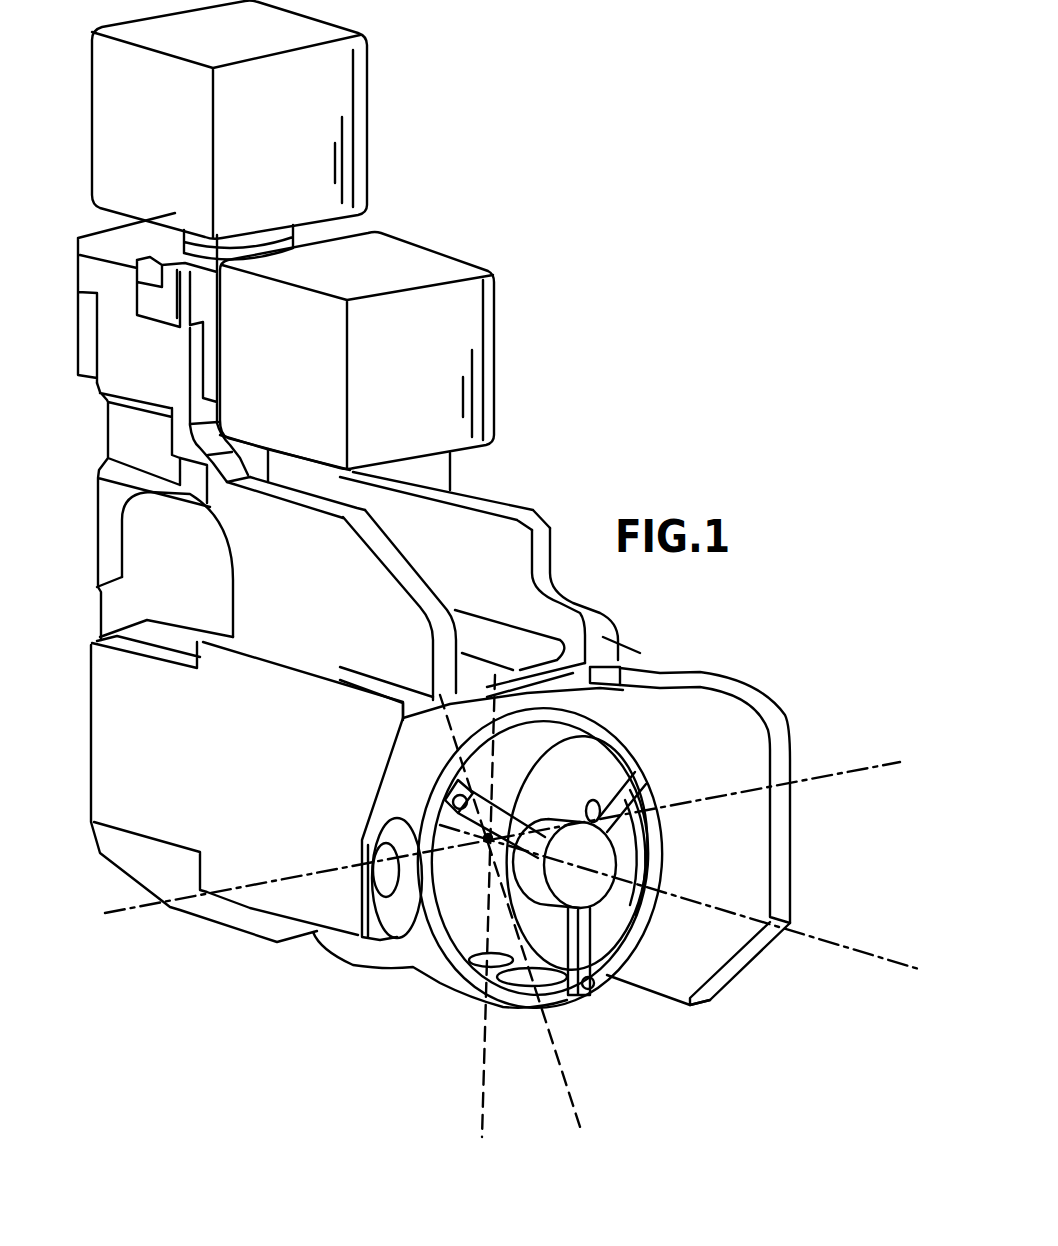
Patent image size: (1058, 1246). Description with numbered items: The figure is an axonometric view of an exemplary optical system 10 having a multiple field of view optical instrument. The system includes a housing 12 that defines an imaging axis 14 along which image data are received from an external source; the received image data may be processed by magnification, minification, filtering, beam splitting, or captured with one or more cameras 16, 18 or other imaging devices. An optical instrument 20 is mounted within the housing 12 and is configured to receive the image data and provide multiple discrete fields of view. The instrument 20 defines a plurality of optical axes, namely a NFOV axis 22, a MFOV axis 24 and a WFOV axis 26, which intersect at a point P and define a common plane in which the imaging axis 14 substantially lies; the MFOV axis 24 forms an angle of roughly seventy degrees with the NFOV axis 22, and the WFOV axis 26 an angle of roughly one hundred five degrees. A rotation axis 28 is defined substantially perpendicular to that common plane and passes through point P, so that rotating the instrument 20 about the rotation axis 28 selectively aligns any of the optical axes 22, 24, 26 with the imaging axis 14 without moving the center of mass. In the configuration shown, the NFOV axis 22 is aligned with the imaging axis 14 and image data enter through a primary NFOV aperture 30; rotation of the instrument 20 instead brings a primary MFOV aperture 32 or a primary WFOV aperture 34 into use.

The optical system 10 is at (624, 265).
The housing 12 is at (97, 603).
The imaging axis 14 is at (833, 936).
The camera 16 is at (497, 355).
The camera 18 is at (375, 120).
The optical instrument 20 is at (372, 990).
The NFOV axis 22 is at (877, 957).
The MFOV axis 24 is at (570, 1090).
The WFOV axis 26 is at (482, 1095).
The rotation axis 28 is at (830, 776).
The primary NFOV aperture 30 is at (623, 987).
The primary MFOV aperture 32 is at (518, 978).
The primary WFOV aperture 34 is at (462, 990).